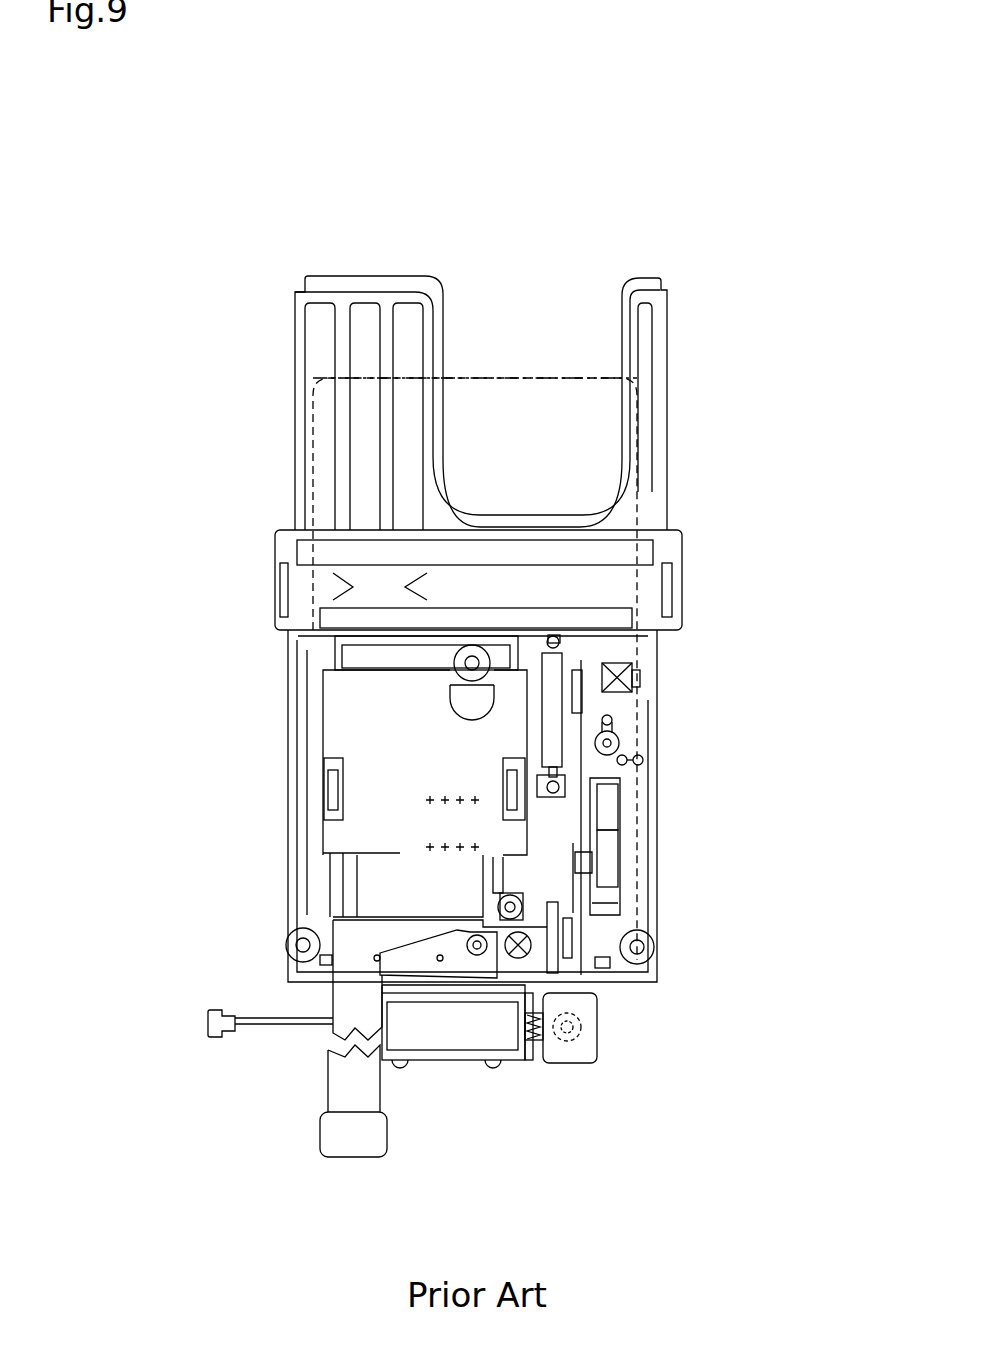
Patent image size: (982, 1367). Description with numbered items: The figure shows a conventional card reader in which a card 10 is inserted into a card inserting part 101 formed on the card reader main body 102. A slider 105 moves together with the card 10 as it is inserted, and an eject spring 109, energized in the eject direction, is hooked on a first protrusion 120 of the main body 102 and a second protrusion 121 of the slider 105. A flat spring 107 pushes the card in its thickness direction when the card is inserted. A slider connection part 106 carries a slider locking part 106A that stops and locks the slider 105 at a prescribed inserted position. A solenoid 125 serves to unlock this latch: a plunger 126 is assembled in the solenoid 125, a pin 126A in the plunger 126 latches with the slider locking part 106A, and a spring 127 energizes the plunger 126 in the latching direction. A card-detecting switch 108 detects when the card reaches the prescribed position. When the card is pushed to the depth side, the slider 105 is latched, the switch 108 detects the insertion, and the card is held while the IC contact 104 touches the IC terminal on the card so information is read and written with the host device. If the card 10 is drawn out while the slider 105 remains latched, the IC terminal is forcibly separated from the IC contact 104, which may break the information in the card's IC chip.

The card 10 is at (540, 377).
The card inserting part 101 is at (445, 287).
The card reader main body 102 is at (661, 458).
The IC contact 104 is at (415, 847).
The slider 105 is at (375, 742).
The slider connection part 106 is at (563, 963).
The slider locking part 106A is at (578, 1033).
The flat spring 107 is at (610, 867).
The card-detecting switch 108 is at (540, 968).
The eject spring 109 is at (556, 670).
The first protrusion 120 is at (558, 640).
The second protrusion 121 is at (556, 780).
The solenoid 125 is at (455, 1035).
The plunger 126 is at (530, 1042).
The pin 126A is at (580, 1047).
The spring 127 is at (543, 1040).